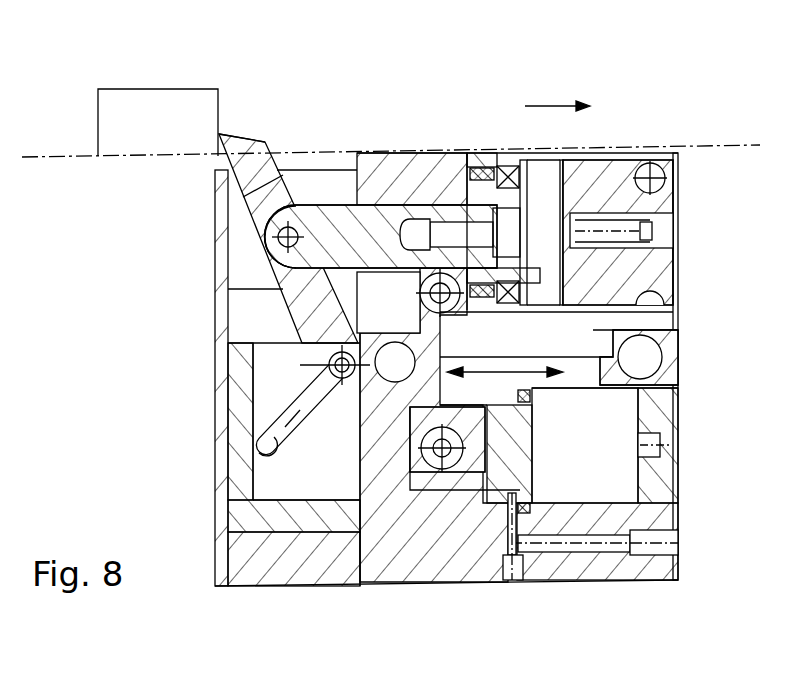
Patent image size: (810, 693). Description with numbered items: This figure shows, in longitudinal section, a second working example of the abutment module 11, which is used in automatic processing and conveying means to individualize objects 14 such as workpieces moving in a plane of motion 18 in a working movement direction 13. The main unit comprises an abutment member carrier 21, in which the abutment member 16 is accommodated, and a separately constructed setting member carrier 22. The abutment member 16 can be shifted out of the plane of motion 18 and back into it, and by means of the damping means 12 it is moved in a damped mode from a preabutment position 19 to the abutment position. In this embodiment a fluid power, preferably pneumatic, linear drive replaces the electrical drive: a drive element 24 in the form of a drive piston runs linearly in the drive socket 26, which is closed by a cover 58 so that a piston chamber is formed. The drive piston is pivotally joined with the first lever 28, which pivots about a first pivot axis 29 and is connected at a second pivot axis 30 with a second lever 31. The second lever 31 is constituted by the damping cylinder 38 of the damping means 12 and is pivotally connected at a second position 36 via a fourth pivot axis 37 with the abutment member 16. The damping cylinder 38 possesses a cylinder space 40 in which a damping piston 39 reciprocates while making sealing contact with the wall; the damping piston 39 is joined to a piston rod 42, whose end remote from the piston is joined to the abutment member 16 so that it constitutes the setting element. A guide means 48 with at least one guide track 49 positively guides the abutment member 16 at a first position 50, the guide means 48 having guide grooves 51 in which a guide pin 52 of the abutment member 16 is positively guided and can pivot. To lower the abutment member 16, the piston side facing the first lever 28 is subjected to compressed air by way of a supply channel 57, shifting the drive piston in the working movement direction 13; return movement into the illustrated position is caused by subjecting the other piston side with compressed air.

The abutment module 11 is at (694, 112).
The damping means 12 is at (690, 207).
The working movement direction 13 is at (559, 78).
The objects 14 is at (120, 105).
The abutment member 16 is at (234, 143).
The plane of motion 18 is at (283, 152).
The preabutment position 19 is at (230, 118).
The abutment member carrier 21 is at (273, 572).
The setting member carrier 22 is at (638, 570).
The drive element 24 is at (512, 430).
The drive socket 26 is at (414, 487).
The first lever 28 is at (452, 343).
The first pivot axis 29 is at (444, 470).
The second pivot axis 30 is at (430, 294).
The second lever 31 is at (402, 162).
The second position 36 is at (276, 237).
The fourth pivot axis 37 is at (286, 250).
The damping cylinder 38 is at (668, 258).
The damping piston 39 is at (482, 180).
The cylinder space 40 is at (537, 178).
The piston rod 42 is at (333, 217).
The guide means 48 is at (277, 408).
The guide track 49 is at (271, 460).
The first position 50 is at (300, 365).
The guide grooves 51 is at (295, 427).
The guide pin 52 is at (330, 355).
The supply channel 57 is at (680, 543).
The cover 58 is at (670, 404).